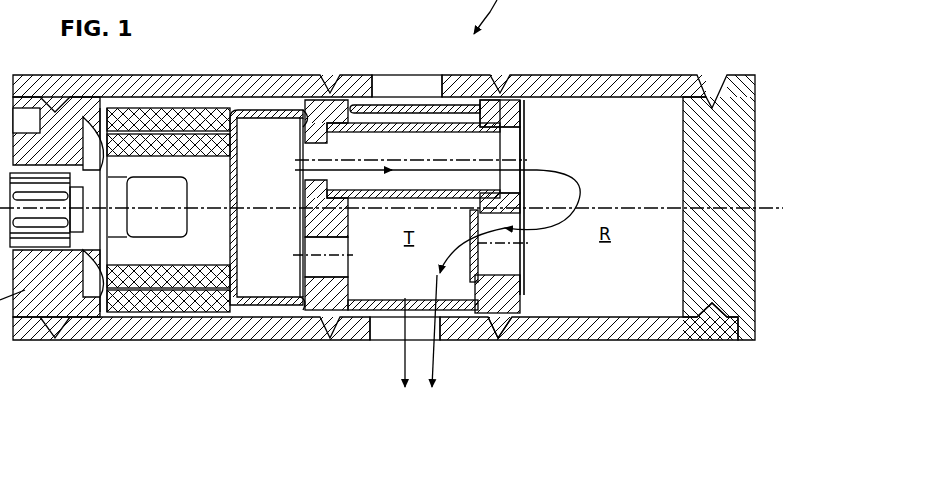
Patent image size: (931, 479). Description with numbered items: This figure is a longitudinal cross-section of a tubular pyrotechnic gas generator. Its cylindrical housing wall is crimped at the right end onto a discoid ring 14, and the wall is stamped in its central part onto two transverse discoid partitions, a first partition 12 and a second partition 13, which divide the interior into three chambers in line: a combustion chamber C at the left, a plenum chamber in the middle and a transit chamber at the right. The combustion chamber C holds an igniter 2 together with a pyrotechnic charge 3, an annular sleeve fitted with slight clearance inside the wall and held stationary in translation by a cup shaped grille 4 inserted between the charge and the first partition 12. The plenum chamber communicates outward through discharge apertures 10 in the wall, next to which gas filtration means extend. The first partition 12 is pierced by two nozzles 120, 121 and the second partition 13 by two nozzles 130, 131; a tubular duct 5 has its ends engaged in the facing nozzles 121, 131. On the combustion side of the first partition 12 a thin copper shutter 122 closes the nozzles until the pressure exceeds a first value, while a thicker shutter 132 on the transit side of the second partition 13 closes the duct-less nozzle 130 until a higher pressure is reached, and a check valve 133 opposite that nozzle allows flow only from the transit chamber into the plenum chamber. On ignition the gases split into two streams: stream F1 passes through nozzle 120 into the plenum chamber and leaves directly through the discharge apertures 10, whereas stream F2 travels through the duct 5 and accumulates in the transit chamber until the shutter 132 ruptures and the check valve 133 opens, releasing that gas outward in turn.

The igniter 2 is at (147, 207).
The pyrotechnic charge 3 is at (192, 108).
The cup shaped grille 4 is at (275, 115).
The tubular duct 5 is at (470, 132).
The discharge apertures 10 is at (410, 78).
The first partition 12 is at (320, 330).
The second partition 13 is at (512, 263).
The discoid ring 14 is at (735, 277).
The nozzle 120 is at (327, 242).
The nozzle 121 is at (306, 145).
The shutter 122 is at (292, 257).
The nozzle 130 is at (494, 340).
The nozzle 131 is at (523, 140).
The shutter 132 is at (525, 252).
The check valve 133 is at (470, 282).
The combustion chamber C is at (197, 243).
The gas stream F1 is at (391, 342).
The gas stream F2 is at (444, 331).